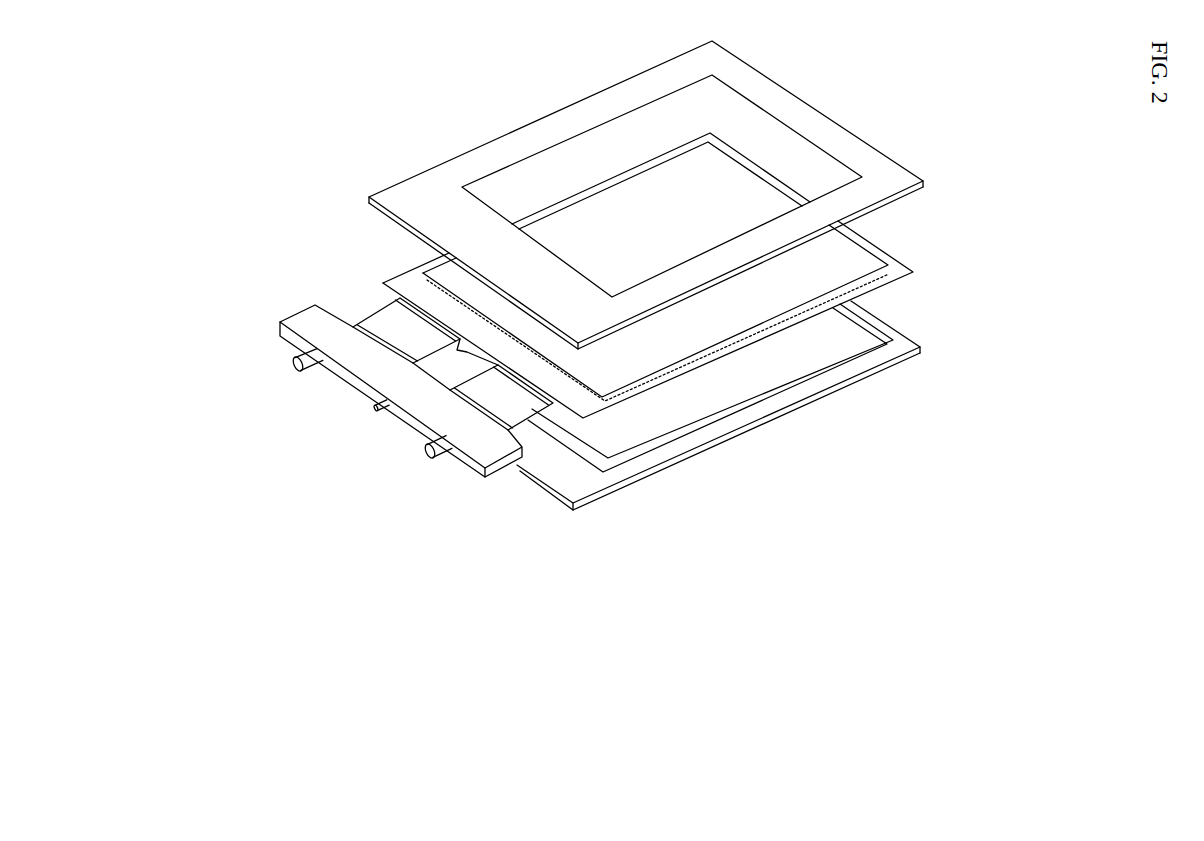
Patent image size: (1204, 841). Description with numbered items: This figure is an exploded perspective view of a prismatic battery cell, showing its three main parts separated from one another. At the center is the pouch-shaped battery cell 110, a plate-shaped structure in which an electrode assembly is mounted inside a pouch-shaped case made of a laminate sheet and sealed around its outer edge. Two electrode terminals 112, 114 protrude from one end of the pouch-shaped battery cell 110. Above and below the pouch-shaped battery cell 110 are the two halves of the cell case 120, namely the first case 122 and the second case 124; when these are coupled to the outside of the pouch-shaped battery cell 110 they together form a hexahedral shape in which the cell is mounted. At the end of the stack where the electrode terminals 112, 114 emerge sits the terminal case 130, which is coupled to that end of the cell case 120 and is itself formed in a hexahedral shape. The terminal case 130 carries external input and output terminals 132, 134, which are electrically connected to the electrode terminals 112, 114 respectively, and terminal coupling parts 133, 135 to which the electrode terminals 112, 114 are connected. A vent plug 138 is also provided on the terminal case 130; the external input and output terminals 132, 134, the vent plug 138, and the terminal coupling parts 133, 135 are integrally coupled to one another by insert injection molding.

The pouch-shaped battery cell 110 is at (753, 190).
The electrode terminal 112 is at (413, 323).
The electrode terminal 114 is at (530, 403).
The cell case 120 is at (727, 275).
The first case 122 is at (913, 195).
The second case 124 is at (885, 323).
The terminal case 130 is at (345, 427).
The external input and output terminal 132 is at (290, 362).
The terminal coupling part 133 is at (379, 323).
The external input and output terminal 134 is at (427, 452).
The terminal coupling part 135 is at (505, 412).
The vent plug 138 is at (376, 406).